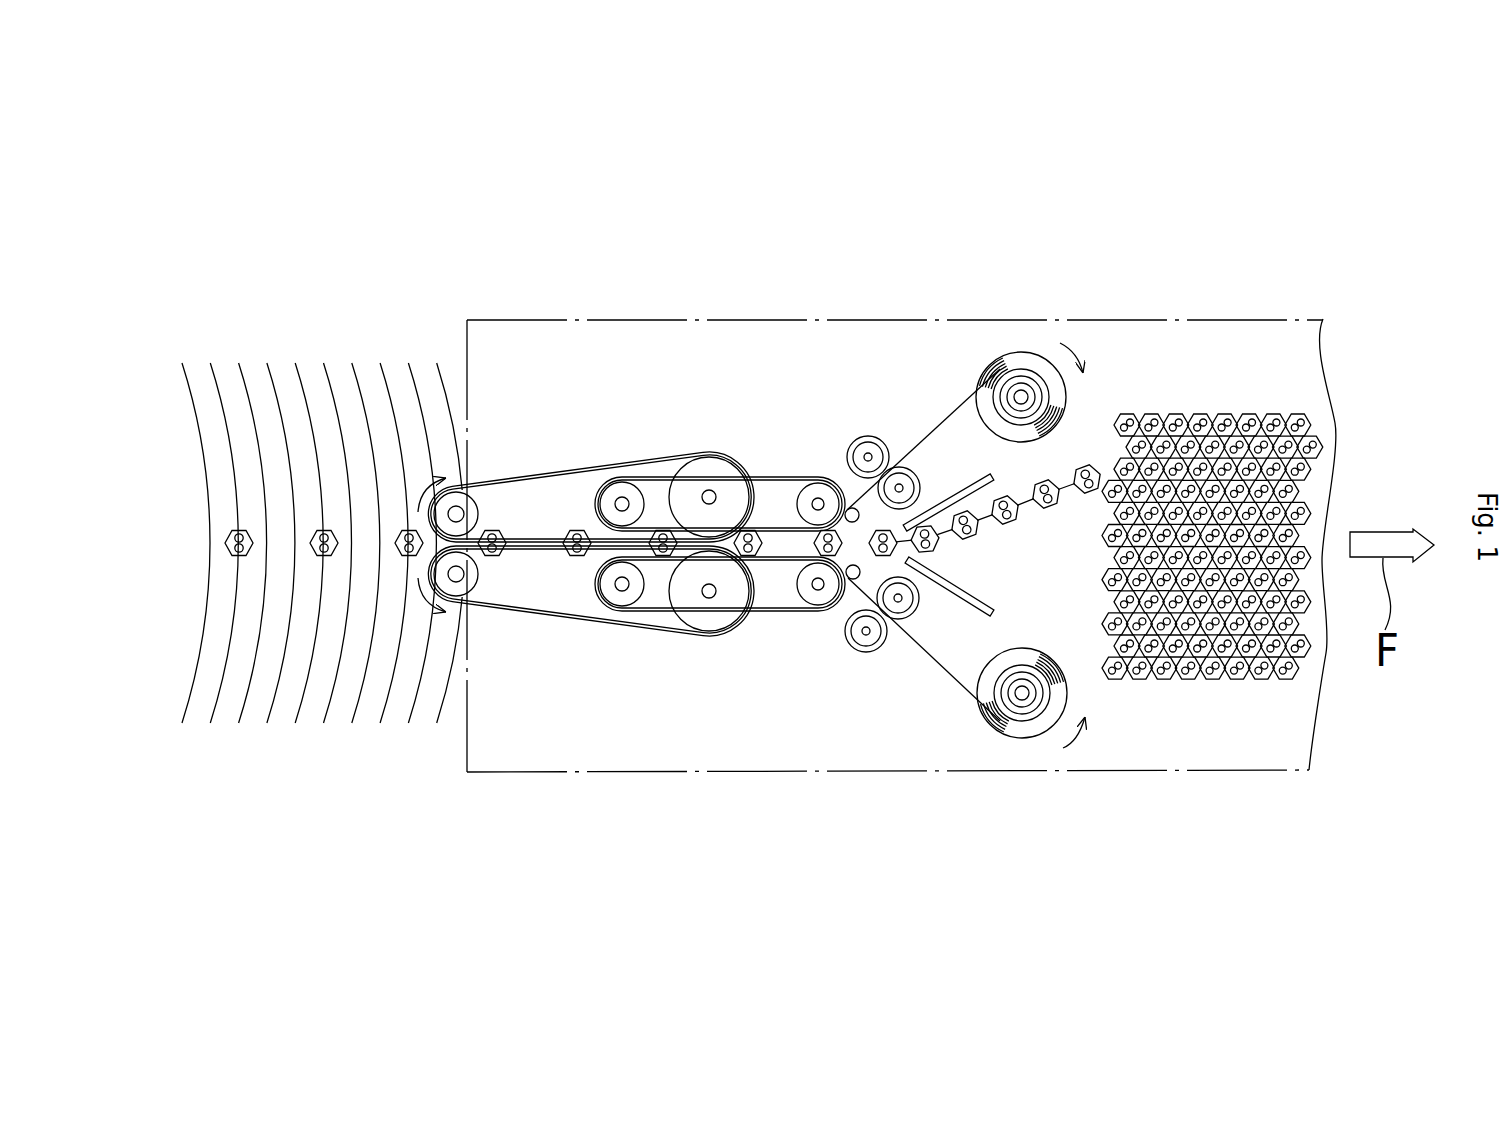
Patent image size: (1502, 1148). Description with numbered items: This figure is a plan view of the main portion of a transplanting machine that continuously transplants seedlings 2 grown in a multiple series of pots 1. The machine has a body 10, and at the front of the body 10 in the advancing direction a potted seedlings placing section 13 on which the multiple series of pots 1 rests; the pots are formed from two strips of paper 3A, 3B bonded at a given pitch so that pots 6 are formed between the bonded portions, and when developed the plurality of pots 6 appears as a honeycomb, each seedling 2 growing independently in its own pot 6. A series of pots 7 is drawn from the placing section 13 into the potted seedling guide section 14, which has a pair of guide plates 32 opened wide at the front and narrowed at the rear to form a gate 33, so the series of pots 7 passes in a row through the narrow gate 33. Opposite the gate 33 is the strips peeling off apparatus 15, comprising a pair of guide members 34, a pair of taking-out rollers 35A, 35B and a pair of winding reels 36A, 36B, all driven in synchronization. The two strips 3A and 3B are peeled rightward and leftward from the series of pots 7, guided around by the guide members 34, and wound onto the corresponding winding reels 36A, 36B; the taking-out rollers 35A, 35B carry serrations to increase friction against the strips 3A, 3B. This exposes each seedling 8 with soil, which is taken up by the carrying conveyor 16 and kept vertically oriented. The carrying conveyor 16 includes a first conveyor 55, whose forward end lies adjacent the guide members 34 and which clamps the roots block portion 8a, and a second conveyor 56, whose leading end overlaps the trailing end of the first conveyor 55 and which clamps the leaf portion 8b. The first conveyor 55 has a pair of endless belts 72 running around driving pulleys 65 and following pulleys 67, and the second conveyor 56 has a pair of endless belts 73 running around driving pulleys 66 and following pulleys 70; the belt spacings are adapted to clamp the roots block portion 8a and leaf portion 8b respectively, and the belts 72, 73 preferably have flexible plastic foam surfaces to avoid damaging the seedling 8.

The multiple series of pots 1 is at (1177, 406).
The seedling 2 is at (1298, 646).
The strip of paper 3A is at (958, 400).
The strip of paper 3B is at (945, 678).
The pot 6 is at (1309, 531).
The series of pots 7 is at (1057, 478).
The seedling with soil 8 is at (740, 521).
The roots block portion 8a is at (770, 476).
The leaf portion 8b is at (562, 612).
The body 10 is at (1277, 318).
The potted seedlings placing section 13 is at (1223, 708).
The potted seedling guide section 14 is at (955, 604).
The strips peeling off apparatus 15 is at (892, 417).
The carrying conveyor 16 is at (615, 418).
The guide plates 32 is at (975, 600).
The gate 33 is at (933, 578).
The guide members 34 is at (848, 505).
The taking-out roller 35A is at (857, 431).
The taking-out roller 35B is at (871, 660).
The winding reel 36A is at (1032, 350).
The winding reel 36B is at (1029, 742).
The first conveyor 55 is at (792, 470).
The second conveyor 56 is at (560, 468).
The driving pulleys 65 is at (617, 593).
The driving pulleys 66 is at (702, 617).
The following pulleys 67 is at (803, 600).
The following pulleys 70 is at (478, 588).
The endless belts 72 is at (650, 477).
The endless belts 73 is at (500, 481).